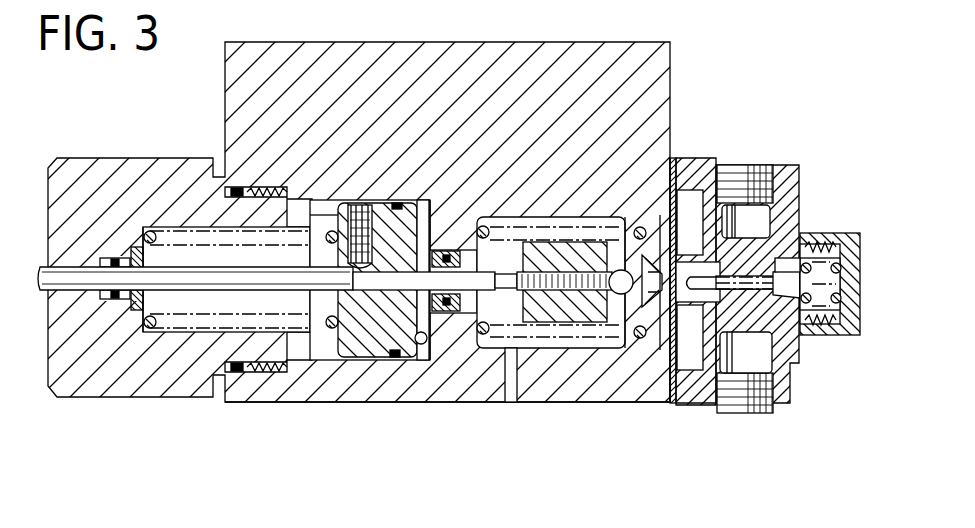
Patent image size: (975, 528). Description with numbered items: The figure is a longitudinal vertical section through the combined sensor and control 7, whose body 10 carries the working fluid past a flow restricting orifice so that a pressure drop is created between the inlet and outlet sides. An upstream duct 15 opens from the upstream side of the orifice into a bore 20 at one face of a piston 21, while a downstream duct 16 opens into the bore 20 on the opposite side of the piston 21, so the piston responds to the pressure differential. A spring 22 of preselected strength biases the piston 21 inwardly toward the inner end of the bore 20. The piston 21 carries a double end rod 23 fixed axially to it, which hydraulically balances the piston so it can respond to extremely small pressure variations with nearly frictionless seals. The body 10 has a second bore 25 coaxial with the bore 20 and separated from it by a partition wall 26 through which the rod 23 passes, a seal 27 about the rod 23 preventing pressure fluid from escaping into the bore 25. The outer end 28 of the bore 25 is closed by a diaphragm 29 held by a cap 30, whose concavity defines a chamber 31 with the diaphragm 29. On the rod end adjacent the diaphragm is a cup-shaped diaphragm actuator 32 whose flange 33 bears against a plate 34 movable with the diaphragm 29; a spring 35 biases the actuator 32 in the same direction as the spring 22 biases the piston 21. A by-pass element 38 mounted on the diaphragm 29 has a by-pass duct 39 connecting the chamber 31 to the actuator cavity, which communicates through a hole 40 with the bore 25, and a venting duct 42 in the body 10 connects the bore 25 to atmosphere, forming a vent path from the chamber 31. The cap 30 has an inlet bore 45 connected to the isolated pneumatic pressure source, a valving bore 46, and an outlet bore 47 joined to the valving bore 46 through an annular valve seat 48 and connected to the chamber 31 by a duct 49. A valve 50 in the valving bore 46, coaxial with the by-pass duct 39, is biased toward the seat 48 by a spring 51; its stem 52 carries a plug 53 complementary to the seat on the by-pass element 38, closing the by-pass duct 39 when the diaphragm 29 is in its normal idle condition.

The combined sensor and control 7 is at (384, 418).
The body 10 is at (473, 403).
The upstream duct 15 is at (420, 336).
The downstream duct 16 is at (316, 202).
The bore 20 is at (327, 350).
The piston 21 is at (408, 205).
The spring 22 is at (150, 328).
The double end rod 23 is at (263, 280).
The bore 25 is at (547, 348).
The partition wall 26 is at (448, 243).
The seal 27 is at (447, 300).
The outer end of the bore 28 is at (676, 214).
The diaphragm 29 is at (695, 200).
The cap 30 is at (676, 160).
The chamber 31 is at (700, 210).
The diaphragm actuator 32 is at (578, 318).
The flange 33 is at (665, 360).
The plate 34 is at (676, 370).
The spring 35 is at (462, 258).
The by-pass element 38 is at (688, 375).
The by-pass duct 39 is at (616, 271).
The hole 40 is at (590, 243).
The venting duct 42 is at (510, 395).
The inlet bore 45 is at (805, 258).
The valving bore 46 is at (787, 260).
The outlet bore 47 is at (758, 186).
The annular valve seat 48 is at (795, 313).
The duct 49 is at (695, 212).
The valve 50 is at (800, 281).
The spring 51 is at (838, 299).
The stem 52 is at (753, 288).
The plug 53 is at (648, 232).